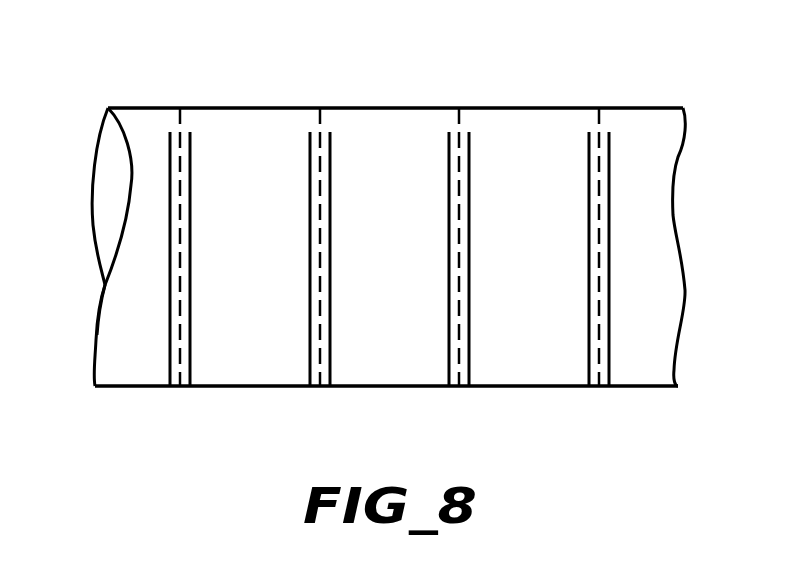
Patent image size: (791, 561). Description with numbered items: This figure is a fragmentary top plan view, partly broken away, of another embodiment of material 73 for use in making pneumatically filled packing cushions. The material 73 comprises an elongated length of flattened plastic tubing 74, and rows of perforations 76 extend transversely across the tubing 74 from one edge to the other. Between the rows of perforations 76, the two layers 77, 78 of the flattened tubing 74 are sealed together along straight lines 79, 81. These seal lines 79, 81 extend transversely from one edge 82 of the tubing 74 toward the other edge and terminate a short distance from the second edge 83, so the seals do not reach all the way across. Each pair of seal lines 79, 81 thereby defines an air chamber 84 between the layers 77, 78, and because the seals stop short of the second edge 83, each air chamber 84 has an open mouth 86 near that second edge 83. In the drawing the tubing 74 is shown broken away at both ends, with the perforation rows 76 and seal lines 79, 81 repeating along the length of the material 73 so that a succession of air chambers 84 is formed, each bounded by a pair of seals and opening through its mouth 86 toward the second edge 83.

The material 73 is at (699, 212).
The flattened plastic tubing 74 is at (682, 294).
The perforations 76 is at (597, 215).
The layer of the flattened tubing 77 is at (127, 327).
The layer of the flattened tubing 78 is at (110, 198).
The seal line 79 is at (331, 250).
The seal line 81 is at (308, 245).
The first edge of the tubing 82 is at (383, 388).
The second edge of the tubing 83 is at (392, 107).
The air chamber 84 is at (253, 317).
The open mouth 86 is at (253, 137).